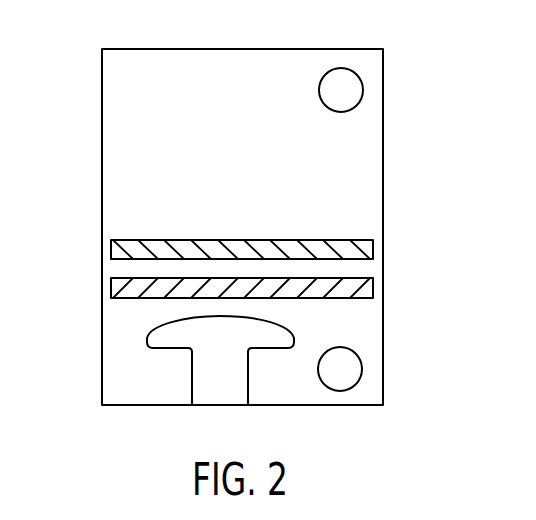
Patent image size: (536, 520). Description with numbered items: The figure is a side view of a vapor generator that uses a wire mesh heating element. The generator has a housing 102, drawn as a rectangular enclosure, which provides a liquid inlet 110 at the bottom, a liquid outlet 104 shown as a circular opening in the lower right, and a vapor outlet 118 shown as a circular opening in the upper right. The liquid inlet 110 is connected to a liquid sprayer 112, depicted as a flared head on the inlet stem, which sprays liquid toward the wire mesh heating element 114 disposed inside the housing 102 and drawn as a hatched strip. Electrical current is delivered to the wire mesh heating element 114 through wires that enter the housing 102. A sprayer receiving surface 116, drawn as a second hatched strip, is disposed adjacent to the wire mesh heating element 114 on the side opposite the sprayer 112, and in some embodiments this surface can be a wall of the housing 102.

The housing 102 is at (118, 99).
The liquid outlet 104 is at (362, 369).
The liquid inlet 110 is at (219, 390).
The liquid sprayer 112 is at (163, 336).
The wire mesh heating element 114 is at (373, 290).
The sprayer receiving surface 116 is at (373, 244).
The vapor outlet 118 is at (362, 90).